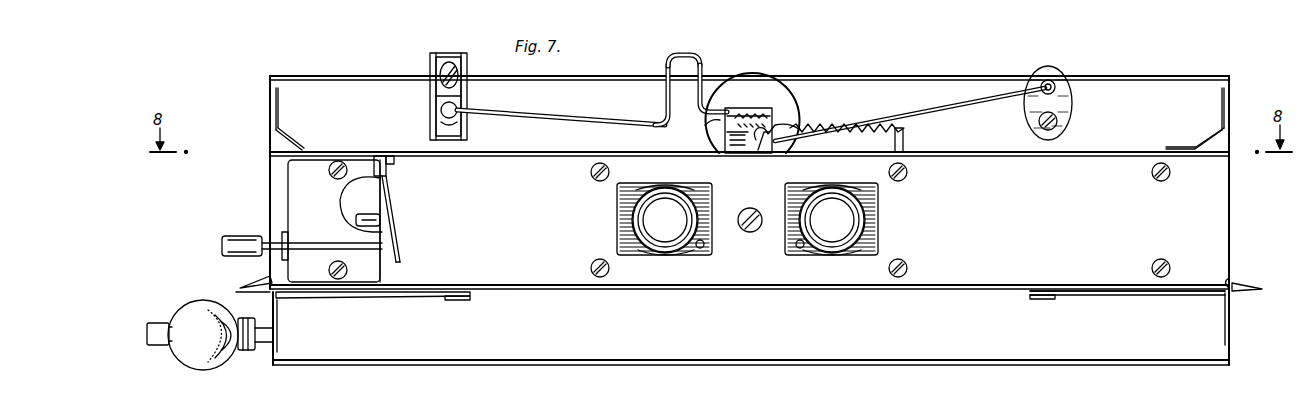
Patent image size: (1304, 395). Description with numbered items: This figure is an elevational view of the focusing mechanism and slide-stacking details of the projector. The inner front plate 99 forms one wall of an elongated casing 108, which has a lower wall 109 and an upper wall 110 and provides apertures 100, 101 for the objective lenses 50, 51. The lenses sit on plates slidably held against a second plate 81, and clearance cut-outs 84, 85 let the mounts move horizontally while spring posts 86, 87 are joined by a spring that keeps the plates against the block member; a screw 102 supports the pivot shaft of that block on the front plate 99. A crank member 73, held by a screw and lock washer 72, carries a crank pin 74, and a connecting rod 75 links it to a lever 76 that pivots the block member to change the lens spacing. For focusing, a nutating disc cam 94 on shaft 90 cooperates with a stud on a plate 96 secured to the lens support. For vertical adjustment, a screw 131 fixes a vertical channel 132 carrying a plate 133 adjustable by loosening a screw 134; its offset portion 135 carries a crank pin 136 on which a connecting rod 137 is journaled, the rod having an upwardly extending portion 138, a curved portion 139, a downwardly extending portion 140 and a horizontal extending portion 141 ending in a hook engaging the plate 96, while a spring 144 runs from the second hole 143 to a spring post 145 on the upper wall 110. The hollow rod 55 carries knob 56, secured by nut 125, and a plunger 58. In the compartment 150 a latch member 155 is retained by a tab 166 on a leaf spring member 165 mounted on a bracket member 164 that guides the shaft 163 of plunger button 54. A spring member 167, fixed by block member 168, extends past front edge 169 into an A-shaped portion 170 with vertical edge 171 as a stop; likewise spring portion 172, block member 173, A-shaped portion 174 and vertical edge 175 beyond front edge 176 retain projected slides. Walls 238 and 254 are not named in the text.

The objective lens 50 is at (862, 210).
The objective lens 51 is at (640, 212).
The plunger button 54 is at (233, 242).
The rod 55 is at (276, 334).
The knob 56 is at (204, 356).
The plunger 58 is at (156, 342).
The screw and lock washer 72 is at (1058, 121).
The crank member 73 is at (1040, 70).
The crank pin 74 is at (1058, 89).
The connecting rod 75 is at (940, 108).
The lever 76 is at (756, 152).
The second plate 81 is at (615, 239).
The clearance cut-out 84 is at (808, 256).
The clearance cut-out 85 is at (684, 256).
The spring post 86 is at (800, 250).
The spring post 87 is at (700, 250).
The shaft 90 is at (746, 106).
The nutating disc cam 94 is at (772, 75).
The plate 96 is at (782, 110).
The inner front plate 99 is at (1222, 182).
The aperture 100 is at (826, 186).
The aperture 101 is at (682, 182).
The screw 102 is at (752, 232).
The elongated casing 108 is at (744, 290).
The lower wall 109 is at (972, 290).
The upper wall 110 is at (973, 152).
The nut 125 is at (247, 352).
The screw 131 is at (462, 126).
The vertical channel 132 is at (464, 62).
The plate 133 is at (440, 60).
The screw 134 is at (441, 80).
The offset portion 135 is at (436, 98).
The crank pin 136 is at (441, 114).
The connecting rod 137 is at (540, 124).
The upwardly extending portion 138 is at (664, 102).
The curved portion 139 is at (682, 58).
The downwardly extending portion 140 is at (705, 68).
The horizontal extending portion 141 is at (727, 119).
The second hole 143 is at (735, 130).
The spring 144 is at (815, 129).
The spring post 145 is at (905, 139).
The compartment 150 is at (276, 178).
The latch member 155 is at (372, 218).
The shaft 163 is at (322, 248).
The bracket member 164 is at (358, 164).
The leaf spring member 165 is at (390, 198).
The tab 166 is at (384, 221).
The spring member 167 is at (324, 293).
The block member 168 is at (465, 296).
The front edge 169 is at (272, 209).
The A-shaped portion 170 is at (238, 285).
The vertical edge 171 is at (270, 276).
The spring portion 172 is at (1152, 296).
The block member 173 is at (1038, 297).
The A-shaped portion 174 is at (1252, 284).
The vertical edge 175 is at (1230, 280).
The front edge 176 is at (1232, 210).
The top wall 238 is at (1142, 74).
The bottom wall 254 is at (1028, 362).